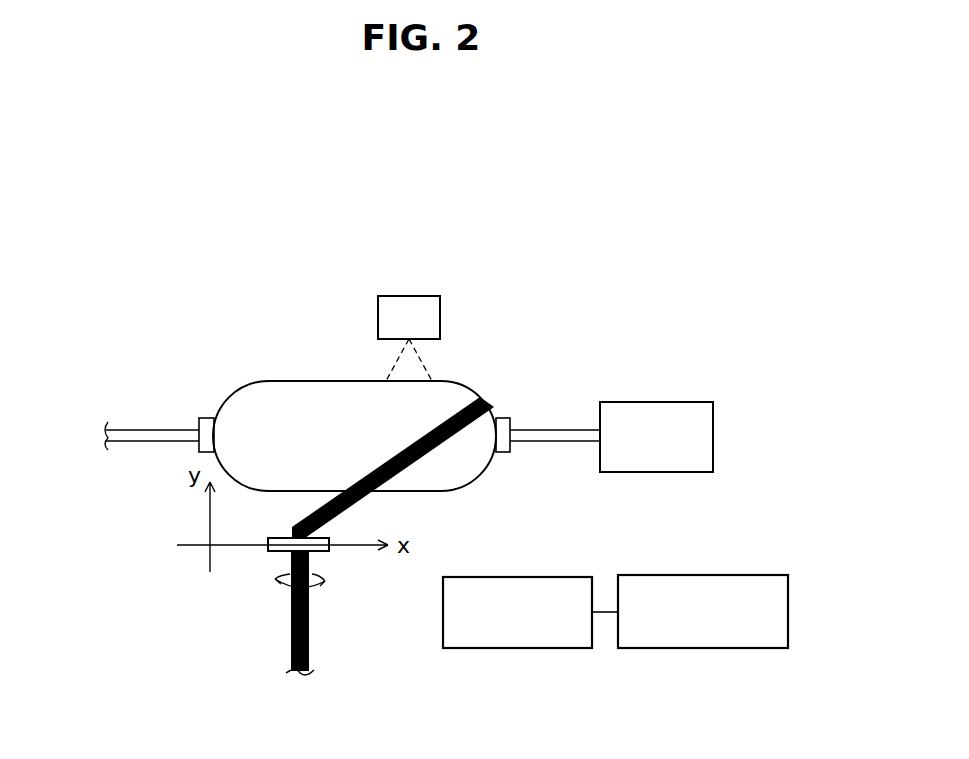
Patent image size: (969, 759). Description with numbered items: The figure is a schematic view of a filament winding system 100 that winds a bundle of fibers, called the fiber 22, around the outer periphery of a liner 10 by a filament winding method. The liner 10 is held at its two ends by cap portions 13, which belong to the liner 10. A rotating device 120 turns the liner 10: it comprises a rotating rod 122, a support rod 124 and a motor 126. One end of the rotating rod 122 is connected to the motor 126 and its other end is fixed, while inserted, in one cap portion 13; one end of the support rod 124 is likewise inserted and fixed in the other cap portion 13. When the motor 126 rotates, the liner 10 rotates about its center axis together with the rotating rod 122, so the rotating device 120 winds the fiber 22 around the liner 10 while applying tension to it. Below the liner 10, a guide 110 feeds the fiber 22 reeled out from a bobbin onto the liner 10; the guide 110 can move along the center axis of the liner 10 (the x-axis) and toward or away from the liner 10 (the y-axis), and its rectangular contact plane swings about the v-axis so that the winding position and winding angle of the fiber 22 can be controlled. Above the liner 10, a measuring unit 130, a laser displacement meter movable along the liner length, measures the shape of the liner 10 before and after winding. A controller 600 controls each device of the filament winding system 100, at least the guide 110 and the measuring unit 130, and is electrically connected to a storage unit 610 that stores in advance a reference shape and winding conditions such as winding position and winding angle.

The filament winding system 100 is at (730, 243).
The rotating device 120 is at (691, 212).
The support rod 124 is at (125, 430).
The rotating rod 122 is at (555, 430).
The motor 126 is at (655, 402).
The cap portion 13 is at (197, 417).
The liner 10 is at (293, 380).
The measuring unit 130 is at (423, 296).
The guide 110 is at (329, 548).
The fiber 22 is at (309, 610).
The controller 600 is at (513, 576).
The storage unit 610 is at (688, 575).